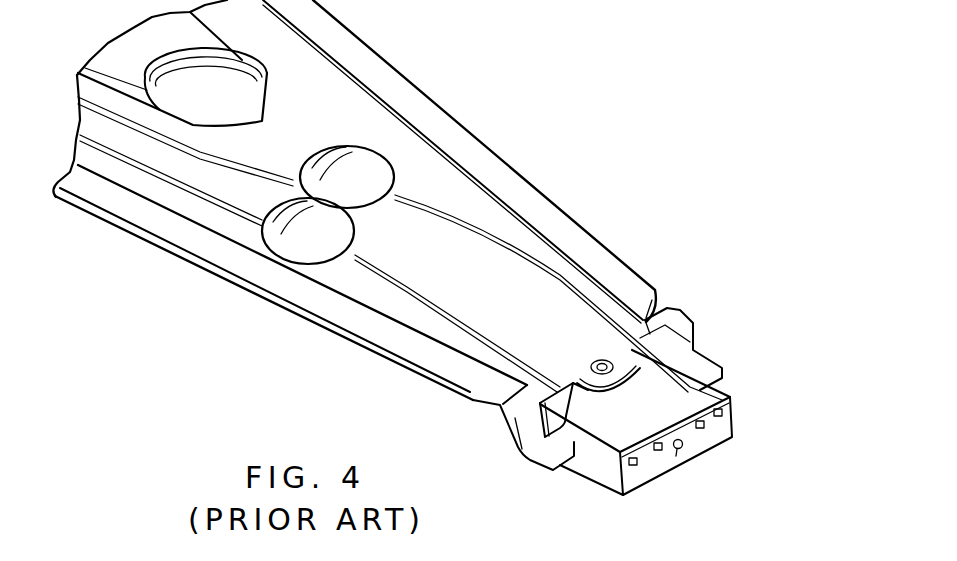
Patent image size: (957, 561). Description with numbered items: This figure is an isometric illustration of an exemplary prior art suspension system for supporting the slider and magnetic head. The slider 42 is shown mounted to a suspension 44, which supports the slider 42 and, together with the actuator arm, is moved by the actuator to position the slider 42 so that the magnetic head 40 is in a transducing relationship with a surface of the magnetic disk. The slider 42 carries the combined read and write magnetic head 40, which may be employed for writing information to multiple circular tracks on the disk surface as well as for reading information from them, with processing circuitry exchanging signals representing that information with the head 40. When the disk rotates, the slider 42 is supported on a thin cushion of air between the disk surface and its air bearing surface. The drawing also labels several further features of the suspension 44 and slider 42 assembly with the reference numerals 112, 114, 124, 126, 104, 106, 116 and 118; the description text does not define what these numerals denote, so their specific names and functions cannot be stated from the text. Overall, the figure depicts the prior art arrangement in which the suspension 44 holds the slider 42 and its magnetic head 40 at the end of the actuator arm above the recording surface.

The suspension 44 is at (387, 235).
The rail 114 is at (557, 278).
The rail 124 is at (407, 287).
The rail 126 is at (480, 230).
The flexure 112 is at (388, 283).
The slider 42 is at (636, 434).
The contact pad 104 is at (630, 468).
The contact pad 116 is at (656, 452).
The contact pad 106 is at (722, 410).
The contact pad 118 is at (702, 429).
The magnetic head 40 is at (677, 458).